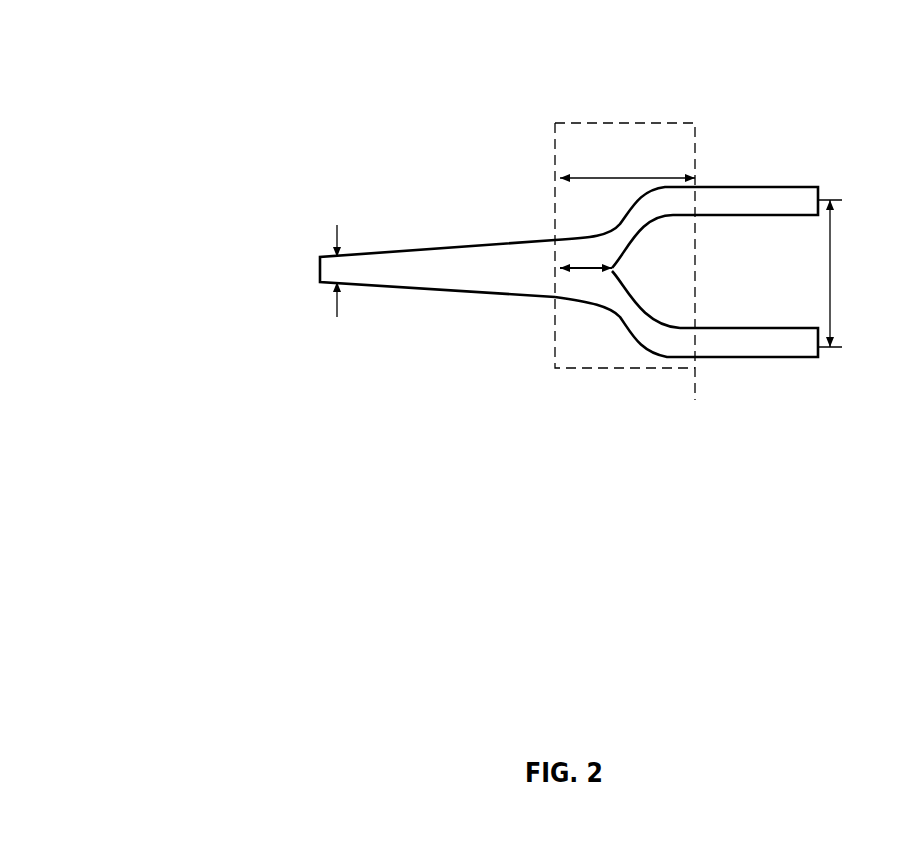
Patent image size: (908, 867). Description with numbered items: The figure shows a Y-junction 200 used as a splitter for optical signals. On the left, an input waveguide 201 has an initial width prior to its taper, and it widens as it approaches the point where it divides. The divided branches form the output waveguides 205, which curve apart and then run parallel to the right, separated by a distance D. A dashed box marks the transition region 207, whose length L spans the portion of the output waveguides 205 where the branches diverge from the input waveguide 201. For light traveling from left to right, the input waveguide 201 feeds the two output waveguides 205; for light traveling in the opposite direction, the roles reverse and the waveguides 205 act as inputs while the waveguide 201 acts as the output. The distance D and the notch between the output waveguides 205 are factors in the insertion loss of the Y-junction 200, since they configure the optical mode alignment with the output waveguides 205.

The Y-junction 200 is at (252, 138).
The input waveguide 201 is at (372, 292).
The output waveguides 205 is at (604, 313).
The transition region 207 is at (620, 123).